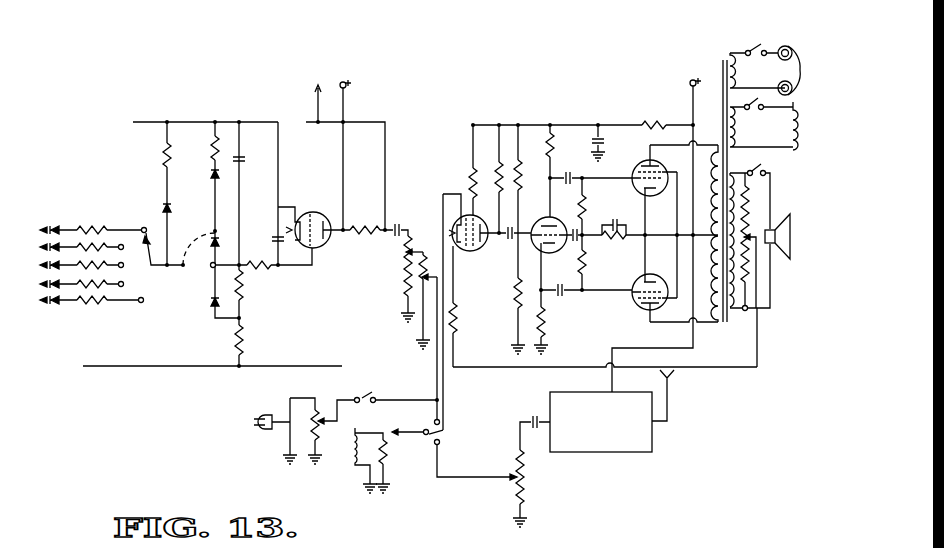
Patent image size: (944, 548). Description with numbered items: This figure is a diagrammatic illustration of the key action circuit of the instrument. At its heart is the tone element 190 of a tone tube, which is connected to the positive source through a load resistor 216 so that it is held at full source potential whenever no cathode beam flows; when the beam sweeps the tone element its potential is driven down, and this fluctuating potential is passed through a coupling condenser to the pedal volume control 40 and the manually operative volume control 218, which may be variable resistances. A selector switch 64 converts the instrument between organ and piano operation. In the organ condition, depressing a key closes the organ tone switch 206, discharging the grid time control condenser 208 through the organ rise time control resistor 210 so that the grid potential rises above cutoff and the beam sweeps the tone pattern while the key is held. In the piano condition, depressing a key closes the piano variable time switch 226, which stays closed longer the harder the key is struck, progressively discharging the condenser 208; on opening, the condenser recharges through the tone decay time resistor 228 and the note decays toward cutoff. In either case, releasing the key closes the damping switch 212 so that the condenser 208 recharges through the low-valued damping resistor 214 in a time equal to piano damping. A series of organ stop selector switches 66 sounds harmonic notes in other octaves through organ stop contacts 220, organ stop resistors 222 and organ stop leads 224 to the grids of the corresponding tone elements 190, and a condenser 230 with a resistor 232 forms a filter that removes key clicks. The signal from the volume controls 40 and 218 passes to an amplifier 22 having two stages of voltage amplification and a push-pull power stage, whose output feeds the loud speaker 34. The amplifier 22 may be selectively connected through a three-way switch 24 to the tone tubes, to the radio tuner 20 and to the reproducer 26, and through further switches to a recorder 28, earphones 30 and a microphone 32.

The radio tuner 20 is at (612, 443).
The amplifier 22 is at (530, 369).
The three-way switch 24 is at (440, 433).
The reproducer 26 is at (353, 466).
The recorder 28 is at (793, 152).
The earphones 30 is at (788, 49).
The microphone 32 is at (290, 429).
The loud speaker 34 is at (783, 256).
The pedal volume control 40 is at (405, 286).
The selector switch 64 is at (213, 240).
The organ stop selector switches 66 is at (145, 232).
The tone element 190 is at (320, 227).
The organ tone switch 206 is at (167, 205).
The grid time control condenser 208 is at (240, 159).
The organ rise time control resistor 210 is at (167, 156).
The damping switch 212 is at (214, 300).
The damping resistor 214 is at (242, 341).
The load resistor 216 is at (371, 235).
The manually operative volume control 218 is at (422, 310).
The organ stop contacts 220 is at (56, 228).
The organ stop resistors 222 is at (93, 228).
The organ stop leads 224 is at (54, 241).
The piano variable time switch 226 is at (215, 178).
The tone decay time resistor 228 is at (243, 290).
The condenser 230 is at (278, 239).
The resistor 232 is at (270, 268).